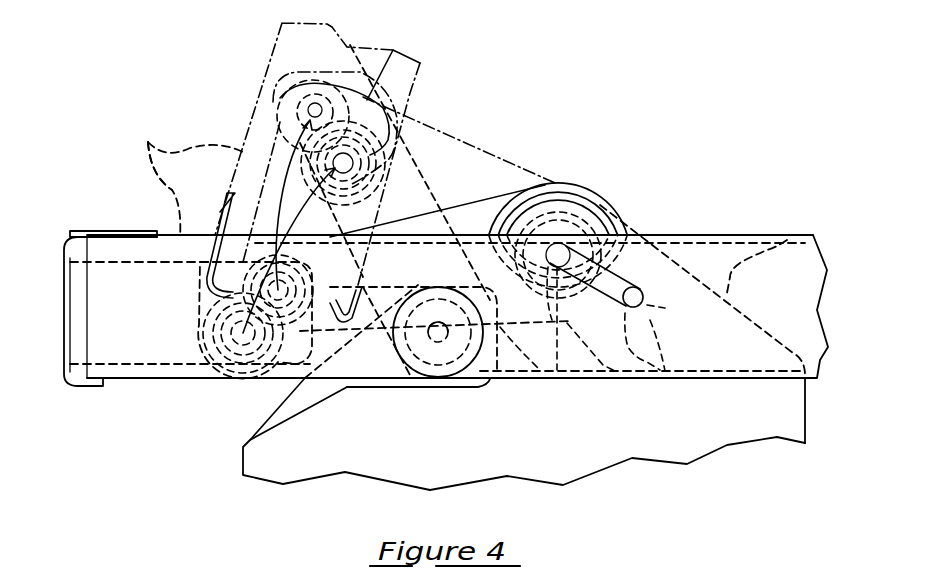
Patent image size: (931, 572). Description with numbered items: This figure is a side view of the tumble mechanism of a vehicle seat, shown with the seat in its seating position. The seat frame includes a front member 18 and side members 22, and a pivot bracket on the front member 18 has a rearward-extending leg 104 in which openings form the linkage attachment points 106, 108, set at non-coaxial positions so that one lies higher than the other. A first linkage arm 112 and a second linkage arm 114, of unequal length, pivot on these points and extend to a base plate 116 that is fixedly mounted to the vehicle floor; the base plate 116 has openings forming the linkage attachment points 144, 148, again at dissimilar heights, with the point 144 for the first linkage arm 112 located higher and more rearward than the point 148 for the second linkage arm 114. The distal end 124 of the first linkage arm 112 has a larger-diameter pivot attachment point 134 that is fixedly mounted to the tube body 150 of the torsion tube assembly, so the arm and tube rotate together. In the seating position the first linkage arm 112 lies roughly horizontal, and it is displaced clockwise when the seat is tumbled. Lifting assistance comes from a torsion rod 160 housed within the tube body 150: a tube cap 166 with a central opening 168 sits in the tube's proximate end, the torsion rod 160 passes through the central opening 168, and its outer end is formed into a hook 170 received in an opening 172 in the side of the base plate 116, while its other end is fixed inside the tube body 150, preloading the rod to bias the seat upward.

The front member 18 is at (218, 212).
The side members 22 is at (167, 153).
The leg 104 is at (70, 240).
The linkage attachment point 106 is at (393, 50).
The linkage attachment point 108 is at (412, 117).
The first linkage arm 112 is at (505, 160).
The second linkage arm 114 is at (205, 308).
The base plate 116 is at (788, 232).
The distal end 124 is at (633, 247).
The pivot attachment point 134 is at (630, 213).
The linkage attachment point 144 is at (605, 193).
The linkage attachment point 148 is at (402, 378).
The tube body 150 is at (647, 263).
The torsion rod 160 is at (640, 280).
The tube cap 166 is at (608, 378).
The central opening 168 is at (555, 378).
The hook 170 is at (640, 307).
The opening 172 is at (665, 378).